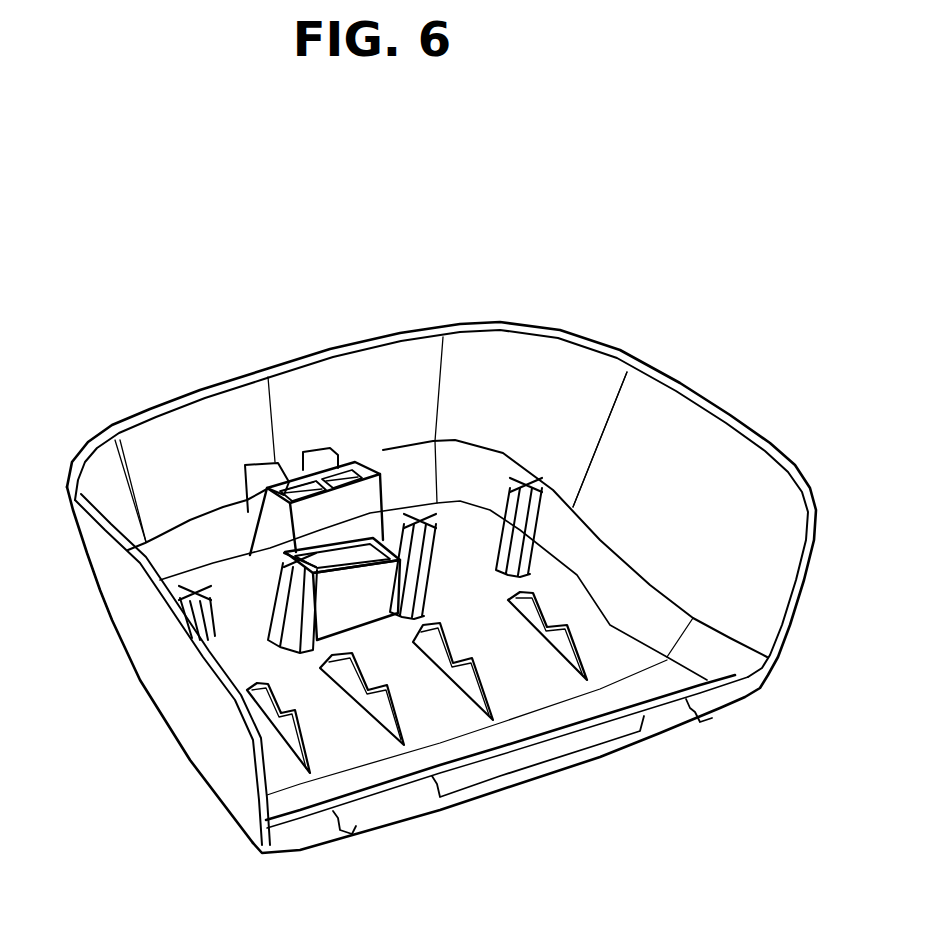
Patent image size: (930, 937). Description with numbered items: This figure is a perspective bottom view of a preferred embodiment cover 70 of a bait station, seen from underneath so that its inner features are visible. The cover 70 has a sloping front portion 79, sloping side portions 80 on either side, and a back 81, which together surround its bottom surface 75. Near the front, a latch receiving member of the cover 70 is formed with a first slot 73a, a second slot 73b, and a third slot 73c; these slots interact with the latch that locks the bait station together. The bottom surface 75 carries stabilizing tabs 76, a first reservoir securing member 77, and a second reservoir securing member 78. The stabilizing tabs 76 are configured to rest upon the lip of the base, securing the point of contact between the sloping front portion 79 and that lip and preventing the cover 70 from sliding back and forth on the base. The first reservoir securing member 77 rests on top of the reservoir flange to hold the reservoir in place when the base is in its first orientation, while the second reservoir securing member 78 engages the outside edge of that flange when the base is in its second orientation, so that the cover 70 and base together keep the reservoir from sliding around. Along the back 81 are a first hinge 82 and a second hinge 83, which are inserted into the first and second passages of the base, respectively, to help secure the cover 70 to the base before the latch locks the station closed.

The cover 70 is at (441, 587).
The first slot 73a is at (275, 598).
The second slot 73b is at (343, 480).
The third slot 73c is at (294, 493).
The bottom surface 75 is at (386, 643).
The stabilizing tabs 76 is at (258, 474).
The first reservoir securing member 77 is at (527, 488).
The second reservoir securing member 78 is at (566, 645).
The sloping front portion 79 is at (168, 448).
The sloping side portions 80 is at (670, 460).
The back 81 is at (500, 757).
The first hinge 82 is at (373, 810).
The second hinge 83 is at (643, 720).